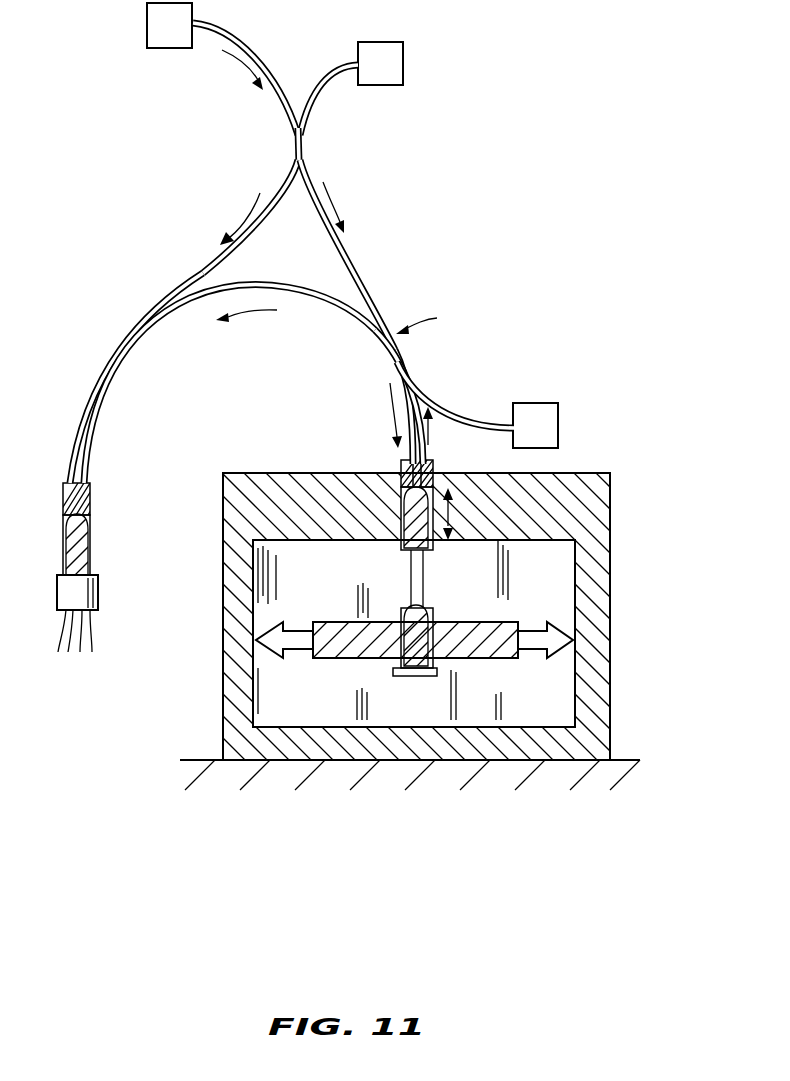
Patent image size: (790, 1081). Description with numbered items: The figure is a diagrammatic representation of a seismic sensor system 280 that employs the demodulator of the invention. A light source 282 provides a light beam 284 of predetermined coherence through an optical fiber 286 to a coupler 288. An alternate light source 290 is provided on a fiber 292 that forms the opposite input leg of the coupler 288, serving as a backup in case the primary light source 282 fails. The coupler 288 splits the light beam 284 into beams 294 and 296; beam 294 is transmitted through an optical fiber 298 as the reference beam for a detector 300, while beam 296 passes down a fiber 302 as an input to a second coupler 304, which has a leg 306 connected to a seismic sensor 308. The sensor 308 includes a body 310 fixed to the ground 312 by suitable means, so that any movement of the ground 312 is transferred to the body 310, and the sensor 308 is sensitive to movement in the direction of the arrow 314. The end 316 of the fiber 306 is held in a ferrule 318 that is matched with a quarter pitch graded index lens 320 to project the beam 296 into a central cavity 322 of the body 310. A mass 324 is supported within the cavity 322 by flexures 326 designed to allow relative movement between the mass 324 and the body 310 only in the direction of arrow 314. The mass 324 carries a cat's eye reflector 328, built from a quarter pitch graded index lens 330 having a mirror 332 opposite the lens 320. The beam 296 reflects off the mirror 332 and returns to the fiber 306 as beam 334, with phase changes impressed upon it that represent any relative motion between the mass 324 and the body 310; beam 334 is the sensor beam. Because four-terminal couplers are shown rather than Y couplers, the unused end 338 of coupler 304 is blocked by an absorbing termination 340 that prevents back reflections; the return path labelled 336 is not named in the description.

The system 280 is at (436, 324).
The light source 282 is at (146, 25).
The light beam 284 is at (240, 67).
The optical fiber 286 is at (232, 36).
The coupler 288 is at (303, 150).
The alternate light source 290 is at (405, 62).
The fiber 292 is at (315, 97).
The beam 294 is at (258, 193).
The beam 296 is at (333, 213).
The optical fiber 298 is at (150, 310).
The detector 300 is at (92, 528).
The fiber 302 is at (360, 292).
The coupler 304 is at (380, 342).
The leg 306 is at (408, 455).
The seismic sensor 308 is at (577, 474).
The body 310 is at (603, 625).
The ground 312 is at (617, 760).
The arrow 314 is at (457, 510).
The end 316 is at (400, 466).
The ferrule 318 is at (435, 466).
The quarter pitch graded index lens 320 is at (400, 520).
The central cavity 322 is at (547, 567).
The mass 324 is at (455, 622).
The flexures 326 is at (275, 622).
The cat's eye reflector 328 is at (422, 608).
The quarter pitch graded index lens 330 is at (396, 666).
The mirror 332 is at (430, 676).
The beam 334 is at (250, 312).
The optical fiber 336 is at (257, 288).
The unused end 338 is at (477, 403).
The absorbing termination 340 is at (556, 402).